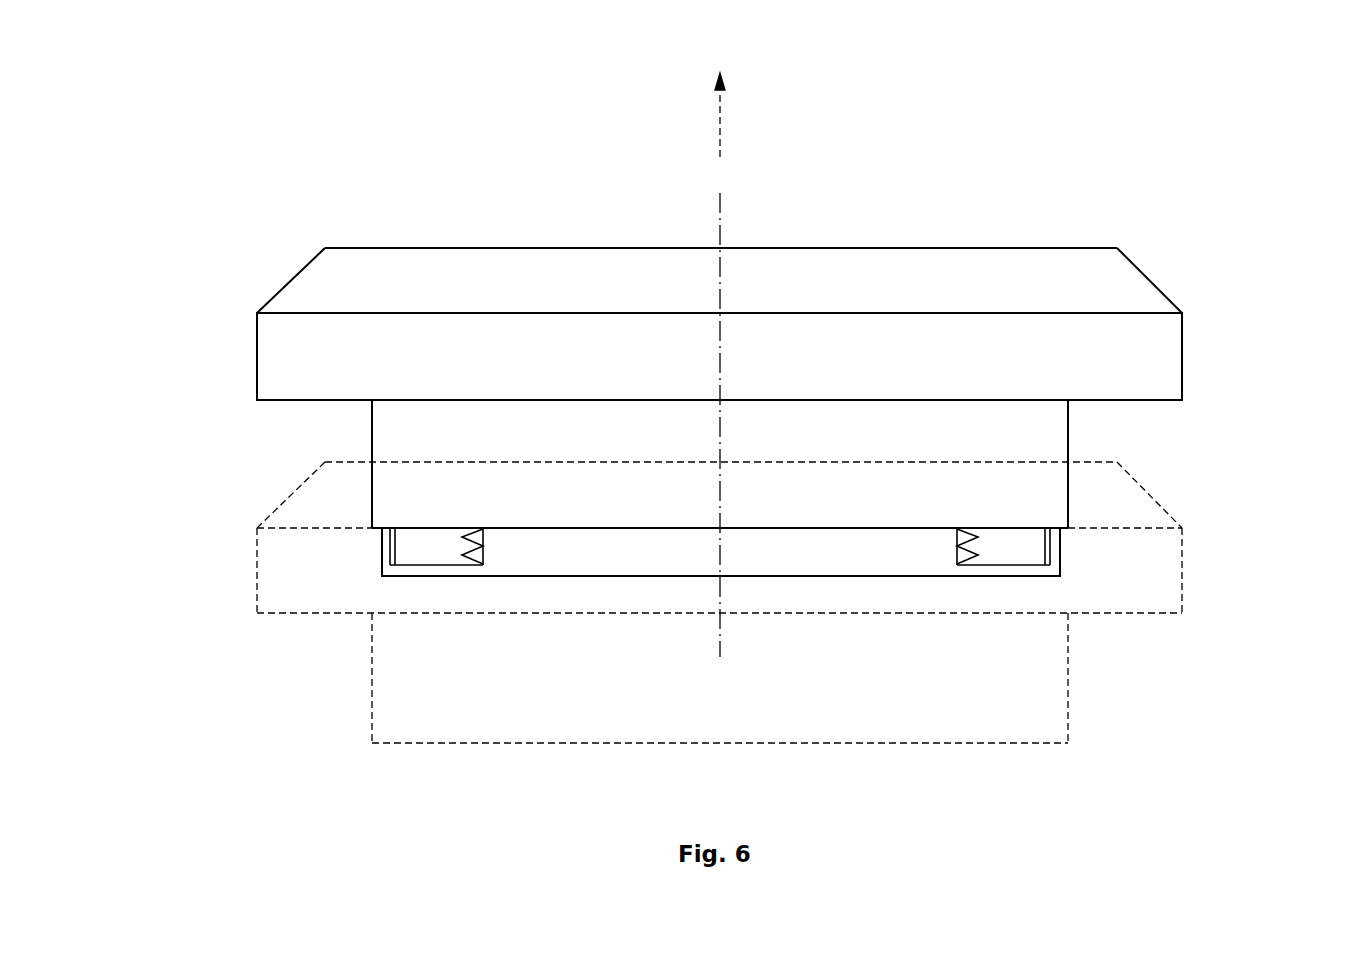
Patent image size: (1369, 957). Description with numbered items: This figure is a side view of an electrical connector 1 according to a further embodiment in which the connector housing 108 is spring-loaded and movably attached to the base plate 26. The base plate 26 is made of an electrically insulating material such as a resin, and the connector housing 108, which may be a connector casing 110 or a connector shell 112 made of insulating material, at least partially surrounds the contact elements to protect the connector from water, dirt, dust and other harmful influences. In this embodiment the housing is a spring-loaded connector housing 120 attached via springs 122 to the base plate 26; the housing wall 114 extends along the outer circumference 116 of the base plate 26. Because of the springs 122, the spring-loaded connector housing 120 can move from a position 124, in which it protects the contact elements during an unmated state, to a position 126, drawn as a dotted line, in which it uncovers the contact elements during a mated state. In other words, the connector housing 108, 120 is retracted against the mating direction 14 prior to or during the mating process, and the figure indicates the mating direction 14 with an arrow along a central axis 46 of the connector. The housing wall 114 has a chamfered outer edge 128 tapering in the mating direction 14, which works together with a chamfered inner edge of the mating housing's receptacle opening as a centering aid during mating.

The electrical connector 1 is at (1052, 94).
The mating direction 14 is at (720, 123).
The axis 46 is at (720, 208).
The base plate 26 is at (533, 556).
The connector housing 108 is at (1083, 210).
The connector casing 110 is at (1047, 462).
The connector shell 112 is at (776, 311).
The housing wall 114 is at (1163, 360).
The outer circumference 116 is at (1062, 546).
The spring-loaded connector housing 120 is at (859, 355).
The springs 122 is at (462, 535).
The position 124 is at (223, 352).
The position 126 is at (211, 567).
The chamfered outer edge 128 is at (290, 284).